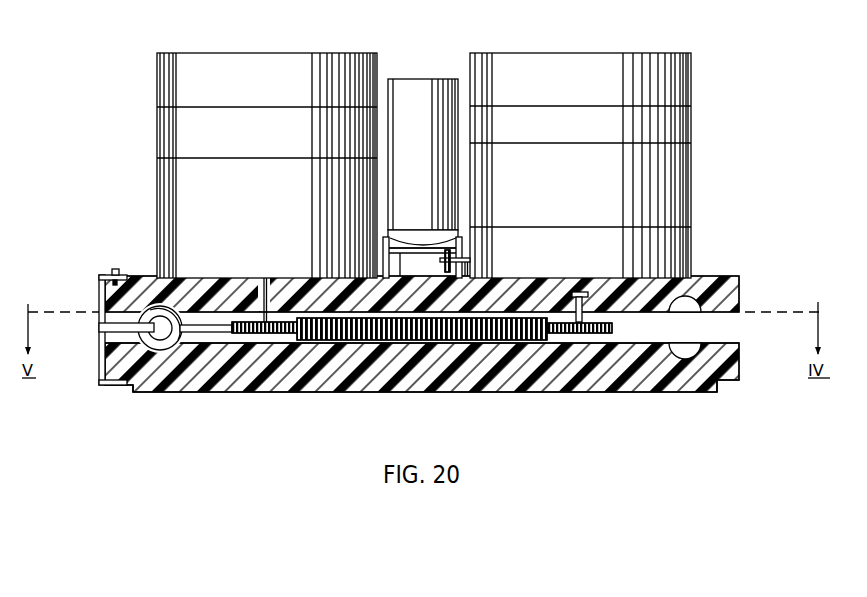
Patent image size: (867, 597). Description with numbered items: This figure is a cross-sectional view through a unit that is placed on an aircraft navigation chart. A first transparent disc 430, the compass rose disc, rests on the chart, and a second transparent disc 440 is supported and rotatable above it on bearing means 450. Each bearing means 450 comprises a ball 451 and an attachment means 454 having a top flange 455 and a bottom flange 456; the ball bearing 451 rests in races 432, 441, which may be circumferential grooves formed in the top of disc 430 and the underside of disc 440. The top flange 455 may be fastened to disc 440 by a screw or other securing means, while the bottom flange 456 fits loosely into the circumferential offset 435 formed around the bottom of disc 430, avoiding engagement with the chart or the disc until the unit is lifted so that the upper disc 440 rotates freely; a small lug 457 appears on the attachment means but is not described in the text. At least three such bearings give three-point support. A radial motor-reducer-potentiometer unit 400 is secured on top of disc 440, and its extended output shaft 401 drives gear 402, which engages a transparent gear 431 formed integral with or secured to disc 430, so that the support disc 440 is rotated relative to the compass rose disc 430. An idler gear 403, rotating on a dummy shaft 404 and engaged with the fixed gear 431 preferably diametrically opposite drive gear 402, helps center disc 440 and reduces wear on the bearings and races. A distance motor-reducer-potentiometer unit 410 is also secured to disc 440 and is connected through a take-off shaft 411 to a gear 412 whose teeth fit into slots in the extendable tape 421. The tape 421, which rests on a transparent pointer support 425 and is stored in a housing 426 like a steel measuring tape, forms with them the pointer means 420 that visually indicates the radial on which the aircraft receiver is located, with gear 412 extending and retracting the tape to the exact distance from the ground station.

The radial motor-reducer-potentiometer unit 400 is at (155, 107).
The distance motor-reducer-potentiometer unit 410 is at (693, 118).
The pointer means 420 is at (432, 156).
The housing 426 is at (438, 85).
The extendable tape 421 is at (421, 247).
The gear 412 is at (444, 268).
The transparent pointer support 425 is at (400, 270).
The take-off shaft 411 is at (466, 278).
The output shaft 401 is at (270, 296).
The second transparent disc 440 is at (740, 278).
The race 441 is at (690, 310).
The first transparent disc 430 is at (636, 392).
The race 432 is at (688, 346).
The circumferential offset 435 is at (134, 392).
The drive gear 402 is at (198, 325).
The transparent gear 431 is at (508, 341).
The idler gear 403 is at (614, 334).
The dummy shaft 404 is at (590, 318).
The ball 451 is at (176, 336).
The bearing means 450 is at (93, 324).
The attachment means 454 is at (99, 294).
The top flange 455 is at (104, 275).
The bottom flange 456 is at (110, 386).
The lug 457 is at (115, 269).